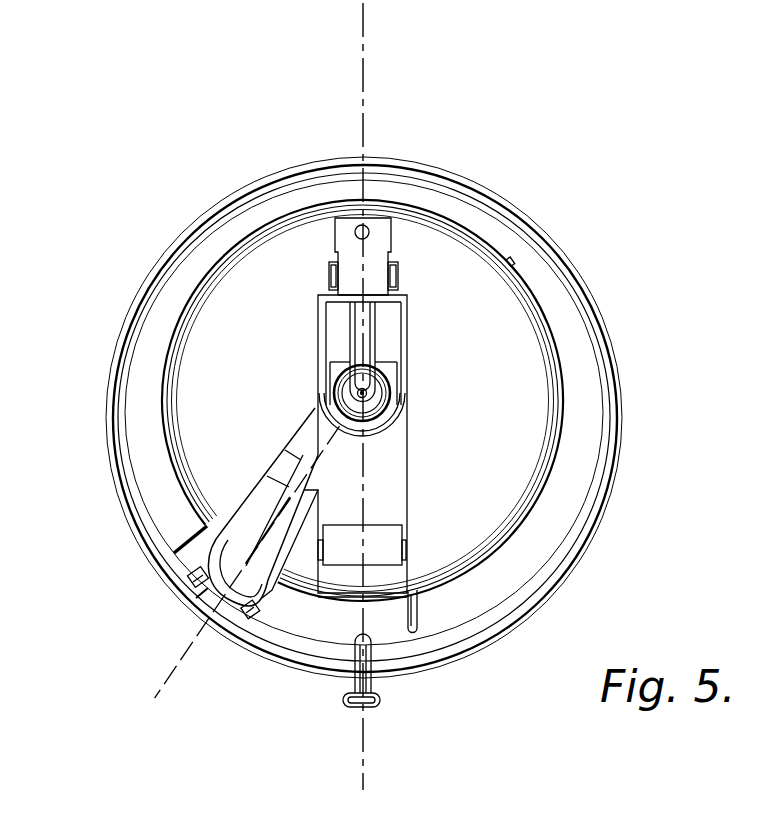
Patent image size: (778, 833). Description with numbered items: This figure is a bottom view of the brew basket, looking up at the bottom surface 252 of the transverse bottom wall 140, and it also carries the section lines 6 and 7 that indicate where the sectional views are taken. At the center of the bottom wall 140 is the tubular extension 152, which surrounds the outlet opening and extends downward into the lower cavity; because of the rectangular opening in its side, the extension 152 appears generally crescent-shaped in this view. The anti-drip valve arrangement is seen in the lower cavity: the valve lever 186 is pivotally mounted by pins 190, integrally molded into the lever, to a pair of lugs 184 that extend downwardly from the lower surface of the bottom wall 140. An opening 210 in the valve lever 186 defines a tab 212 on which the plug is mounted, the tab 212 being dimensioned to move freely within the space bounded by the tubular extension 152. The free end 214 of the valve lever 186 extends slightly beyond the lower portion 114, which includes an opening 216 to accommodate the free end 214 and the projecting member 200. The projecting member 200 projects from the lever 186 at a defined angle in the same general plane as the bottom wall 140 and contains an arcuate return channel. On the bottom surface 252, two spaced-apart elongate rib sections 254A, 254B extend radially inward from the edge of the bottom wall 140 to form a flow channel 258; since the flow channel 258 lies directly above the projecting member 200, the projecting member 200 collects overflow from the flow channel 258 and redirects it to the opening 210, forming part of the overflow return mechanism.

The section line 6- 6 is at (340, 89).
The section line 7- 7 is at (340, 27).
The lower portion 114 is at (510, 262).
The bottom wall 140 is at (447, 243).
The tubular extension 152 is at (360, 394).
The lugs 184 is at (328, 283).
The valve lever 186 is at (317, 337).
The pins 190 is at (328, 263).
The projecting member 200 is at (223, 533).
The opening 210 is at (313, 390).
The tab 212 is at (368, 368).
The free end 214 is at (413, 532).
The opening 216 is at (395, 615).
The bottom surface 252 is at (515, 352).
The elongate rib section 254A is at (187, 570).
The elongate rib section 254B is at (253, 620).
The flow channel 258 is at (200, 584).